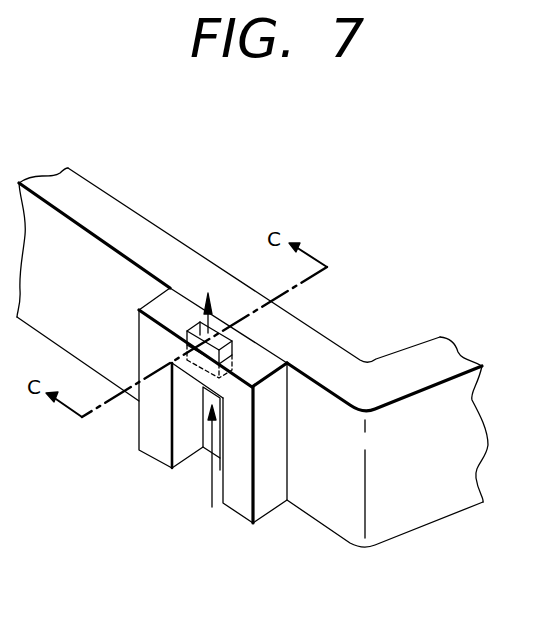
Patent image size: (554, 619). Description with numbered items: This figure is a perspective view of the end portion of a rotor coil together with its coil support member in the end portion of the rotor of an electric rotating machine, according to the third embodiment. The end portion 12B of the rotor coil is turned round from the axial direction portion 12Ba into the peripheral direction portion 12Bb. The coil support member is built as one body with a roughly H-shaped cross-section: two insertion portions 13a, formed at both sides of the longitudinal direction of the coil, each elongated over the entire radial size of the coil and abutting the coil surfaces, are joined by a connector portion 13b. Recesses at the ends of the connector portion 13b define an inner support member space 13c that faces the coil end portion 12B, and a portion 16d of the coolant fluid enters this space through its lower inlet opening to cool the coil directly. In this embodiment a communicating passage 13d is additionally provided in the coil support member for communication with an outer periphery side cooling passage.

The end portion of the rotor coil 12B is at (98, 186).
The axial direction portion 12Ba is at (440, 345).
The peripheral direction portion 12Bb is at (172, 247).
The insertion portions 13a is at (148, 428).
The connector portion 13b is at (225, 362).
The inner support member space 13c is at (183, 440).
The communicating passage 13d is at (232, 331).
The portion of the coolant fluid 16d is at (202, 415).